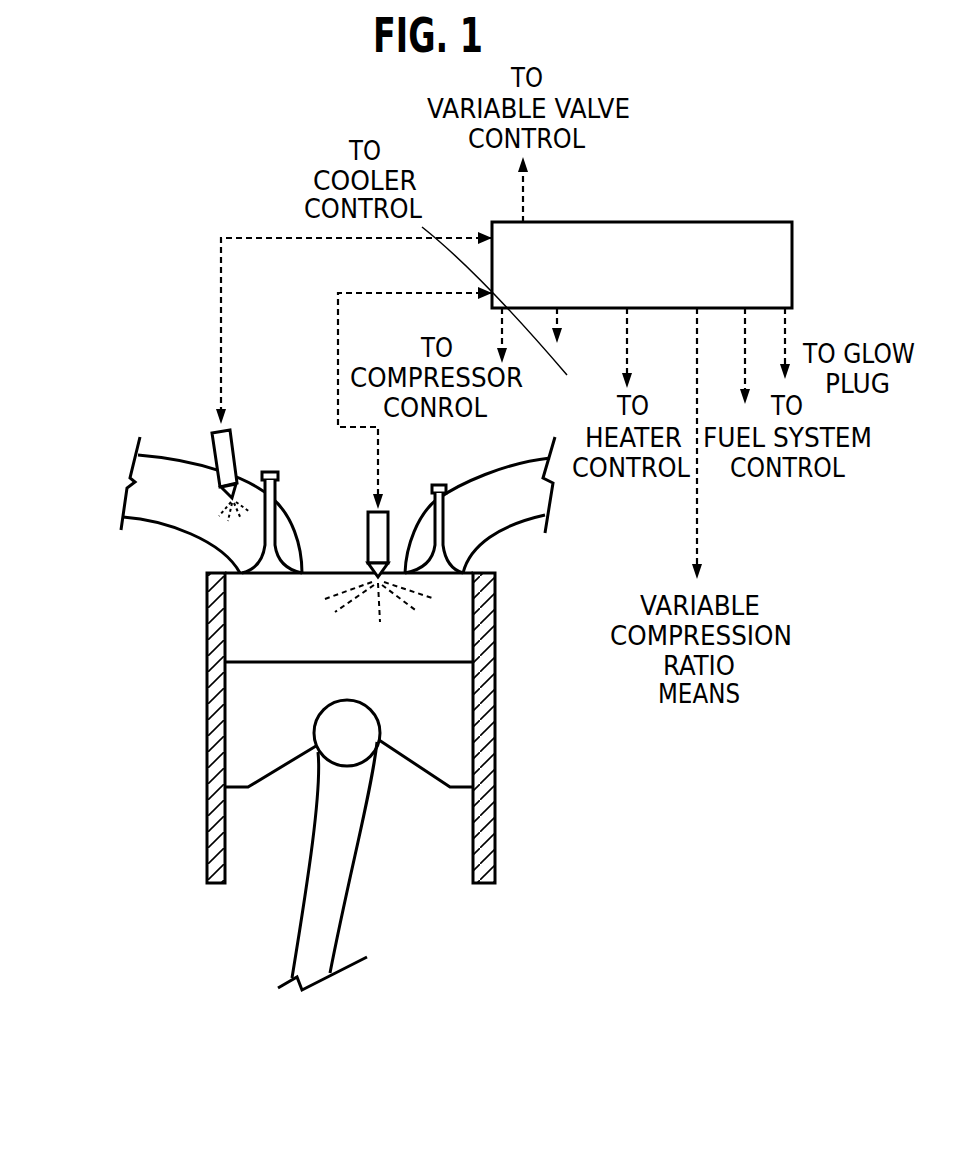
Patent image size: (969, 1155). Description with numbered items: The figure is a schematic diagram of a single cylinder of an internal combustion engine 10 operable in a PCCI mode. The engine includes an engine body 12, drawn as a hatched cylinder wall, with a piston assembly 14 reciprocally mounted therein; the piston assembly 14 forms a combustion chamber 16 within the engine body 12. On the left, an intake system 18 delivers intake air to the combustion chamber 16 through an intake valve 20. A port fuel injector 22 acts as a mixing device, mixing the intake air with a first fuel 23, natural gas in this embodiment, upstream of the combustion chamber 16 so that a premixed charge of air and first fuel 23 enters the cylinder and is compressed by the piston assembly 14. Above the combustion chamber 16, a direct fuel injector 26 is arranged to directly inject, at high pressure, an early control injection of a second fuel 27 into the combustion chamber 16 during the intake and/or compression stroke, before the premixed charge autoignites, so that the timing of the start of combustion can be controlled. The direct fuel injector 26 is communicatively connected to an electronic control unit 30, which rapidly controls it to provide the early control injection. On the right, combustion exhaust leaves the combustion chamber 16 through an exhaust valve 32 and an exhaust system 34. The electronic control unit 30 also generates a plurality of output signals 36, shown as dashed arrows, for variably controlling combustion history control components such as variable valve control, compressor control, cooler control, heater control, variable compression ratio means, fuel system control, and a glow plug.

The internal combustion engine 10 is at (146, 322).
The engine body 12 is at (207, 645).
The piston assembly 14 is at (447, 735).
The combustion chamber 16 is at (453, 645).
The intake system 18 is at (175, 522).
The intake valve 20 is at (268, 472).
The port fuel injector 22 is at (210, 440).
The first fuel 23 is at (225, 498).
The direct fuel injector 26 is at (388, 527).
The second fuel 27 is at (400, 600).
The electronic control unit 30 is at (722, 222).
The exhaust valve 32 is at (443, 493).
The exhaust system 34 is at (492, 528).
The output signals 36 is at (528, 196).